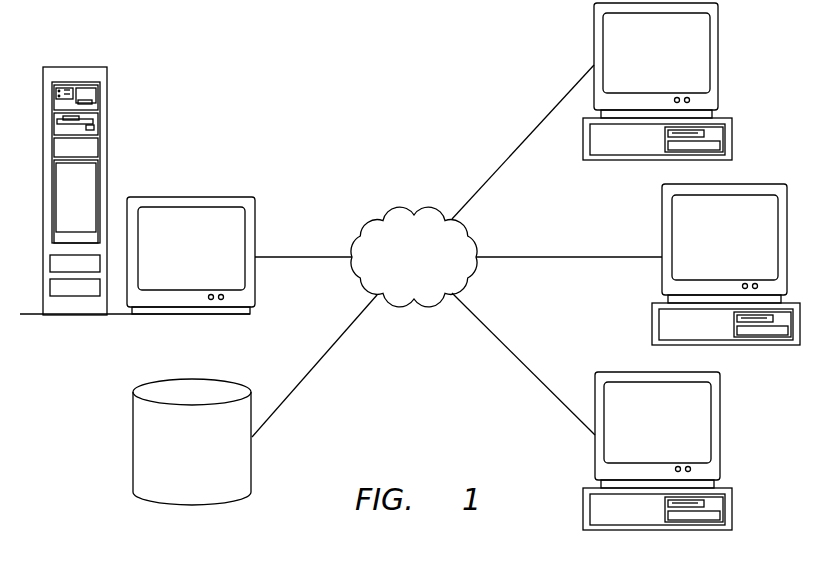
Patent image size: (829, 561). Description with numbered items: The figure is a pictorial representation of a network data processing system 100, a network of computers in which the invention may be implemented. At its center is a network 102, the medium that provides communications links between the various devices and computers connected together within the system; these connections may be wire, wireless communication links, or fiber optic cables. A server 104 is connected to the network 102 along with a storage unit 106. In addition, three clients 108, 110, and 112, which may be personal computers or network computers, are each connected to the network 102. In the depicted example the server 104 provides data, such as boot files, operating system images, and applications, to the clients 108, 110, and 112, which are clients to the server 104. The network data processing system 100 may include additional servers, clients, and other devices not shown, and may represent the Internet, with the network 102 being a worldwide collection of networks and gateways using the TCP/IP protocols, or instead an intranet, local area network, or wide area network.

The network data processing system 100 is at (291, 68).
The network 102 is at (387, 210).
The server 104 is at (174, 258).
The storage unit 106 is at (132, 438).
The client 108 is at (639, 64).
The client 110 is at (707, 249).
The client 112 is at (641, 433).